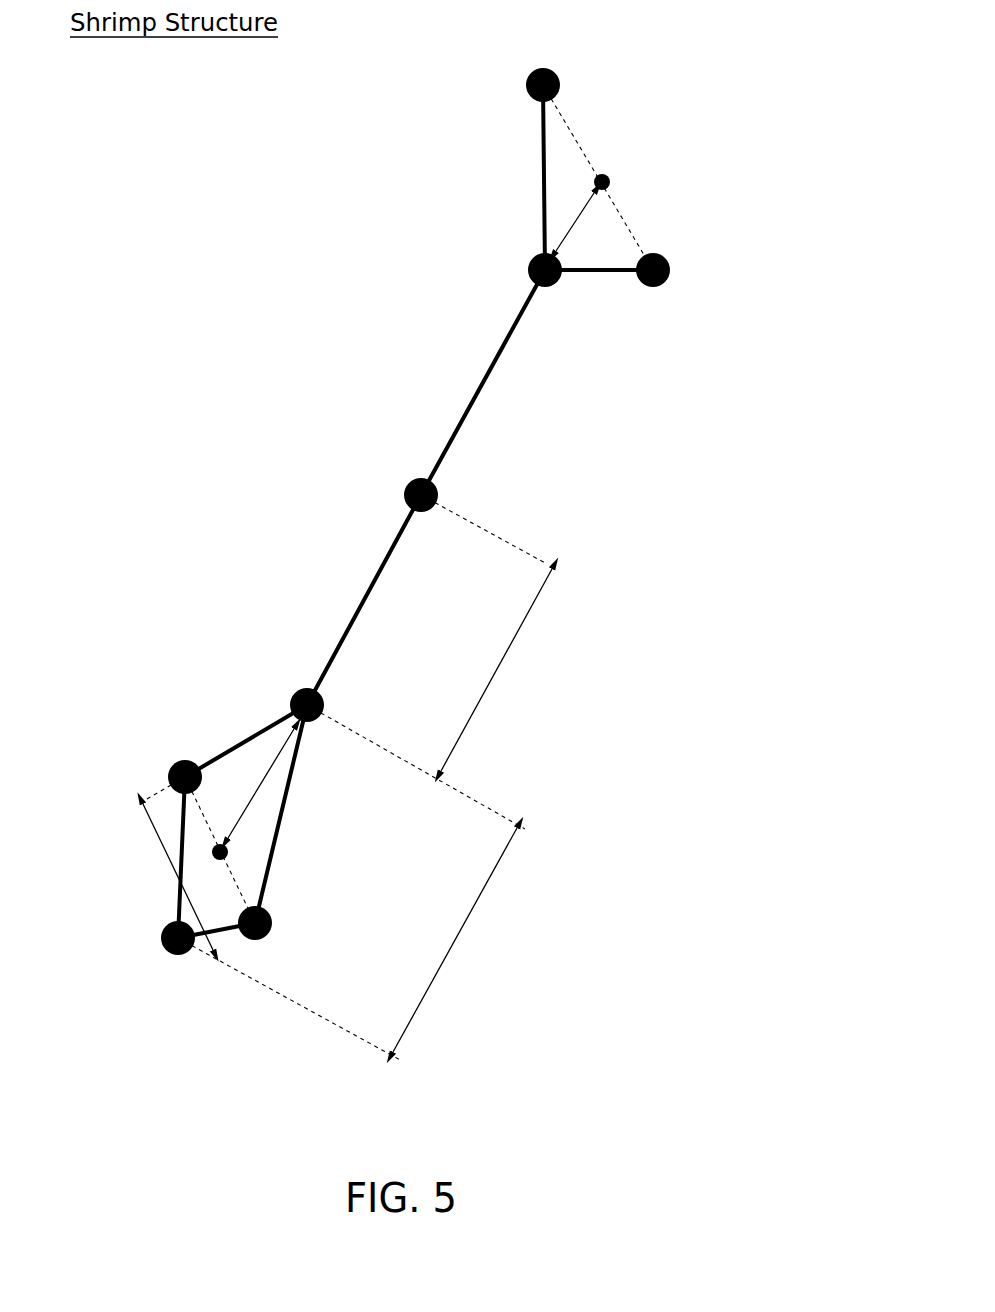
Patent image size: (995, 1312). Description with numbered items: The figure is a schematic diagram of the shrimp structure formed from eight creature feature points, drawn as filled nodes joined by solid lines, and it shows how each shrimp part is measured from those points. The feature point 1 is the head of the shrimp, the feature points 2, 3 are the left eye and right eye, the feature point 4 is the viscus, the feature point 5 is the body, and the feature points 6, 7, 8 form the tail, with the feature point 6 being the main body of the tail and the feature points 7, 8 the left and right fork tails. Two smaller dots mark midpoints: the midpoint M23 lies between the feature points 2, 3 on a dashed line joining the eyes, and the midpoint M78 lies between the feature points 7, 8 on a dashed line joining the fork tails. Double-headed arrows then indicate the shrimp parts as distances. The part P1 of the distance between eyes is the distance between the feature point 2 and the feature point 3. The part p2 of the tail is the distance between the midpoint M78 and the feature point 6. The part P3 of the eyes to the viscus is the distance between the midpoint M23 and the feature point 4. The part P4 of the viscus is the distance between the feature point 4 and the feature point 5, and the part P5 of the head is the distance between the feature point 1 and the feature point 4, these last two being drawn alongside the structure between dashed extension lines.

The feature point 1 is at (160, 933).
The feature point 2 is at (168, 772).
The feature point 3 is at (273, 927).
The feature point 4 is at (290, 707).
The feature point 5 is at (400, 498).
The feature point 6 is at (523, 270).
The feature point 7 is at (560, 88).
The feature point 8 is at (673, 270).
The midpoint M23 is at (230, 853).
The midpoint M78 is at (612, 182).
The part of the distance between eyes P1 is at (160, 845).
The part of the tail p2 is at (573, 222).
The part of the eyes to the viscus P3 is at (263, 780).
The part of the viscus P4 is at (500, 670).
The part of the head P5 is at (457, 937).